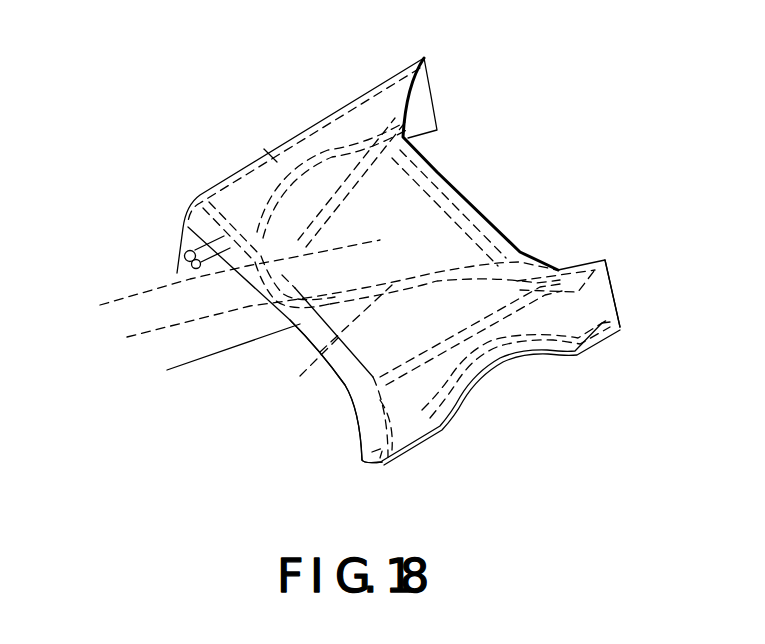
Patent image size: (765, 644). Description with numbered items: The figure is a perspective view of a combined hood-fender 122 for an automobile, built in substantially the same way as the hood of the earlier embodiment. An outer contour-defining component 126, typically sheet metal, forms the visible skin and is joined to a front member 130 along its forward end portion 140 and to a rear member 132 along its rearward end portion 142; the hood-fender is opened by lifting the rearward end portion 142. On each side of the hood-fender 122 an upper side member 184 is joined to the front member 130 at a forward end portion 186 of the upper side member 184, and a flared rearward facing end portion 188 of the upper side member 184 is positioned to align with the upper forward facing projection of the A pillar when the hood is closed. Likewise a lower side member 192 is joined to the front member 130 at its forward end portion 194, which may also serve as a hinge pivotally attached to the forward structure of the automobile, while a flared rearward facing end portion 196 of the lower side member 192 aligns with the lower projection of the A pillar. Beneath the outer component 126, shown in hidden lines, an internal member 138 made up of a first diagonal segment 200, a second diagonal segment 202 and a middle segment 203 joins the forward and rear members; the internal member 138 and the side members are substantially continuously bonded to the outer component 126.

The combined hood-fender 122 is at (496, 129).
The outer contour-defining component 126 is at (380, 177).
The front member 130 is at (216, 279).
The rear member 132 is at (432, 148).
The internal member 138 is at (323, 303).
The forward end portion 140 is at (207, 358).
The rearward end portion 142 is at (490, 222).
The upper side member 184 is at (447, 322).
The forward end portion 186 is at (352, 400).
The flared rearward facing end portion 188 is at (558, 269).
The lower side member 192 is at (584, 348).
The forward end portion 194 is at (367, 467).
The flared rearward facing end portion 196 is at (627, 330).
The first diagonal segment 200 is at (268, 148).
The second diagonal segment 202 is at (320, 362).
The middle segment 203 is at (314, 308).